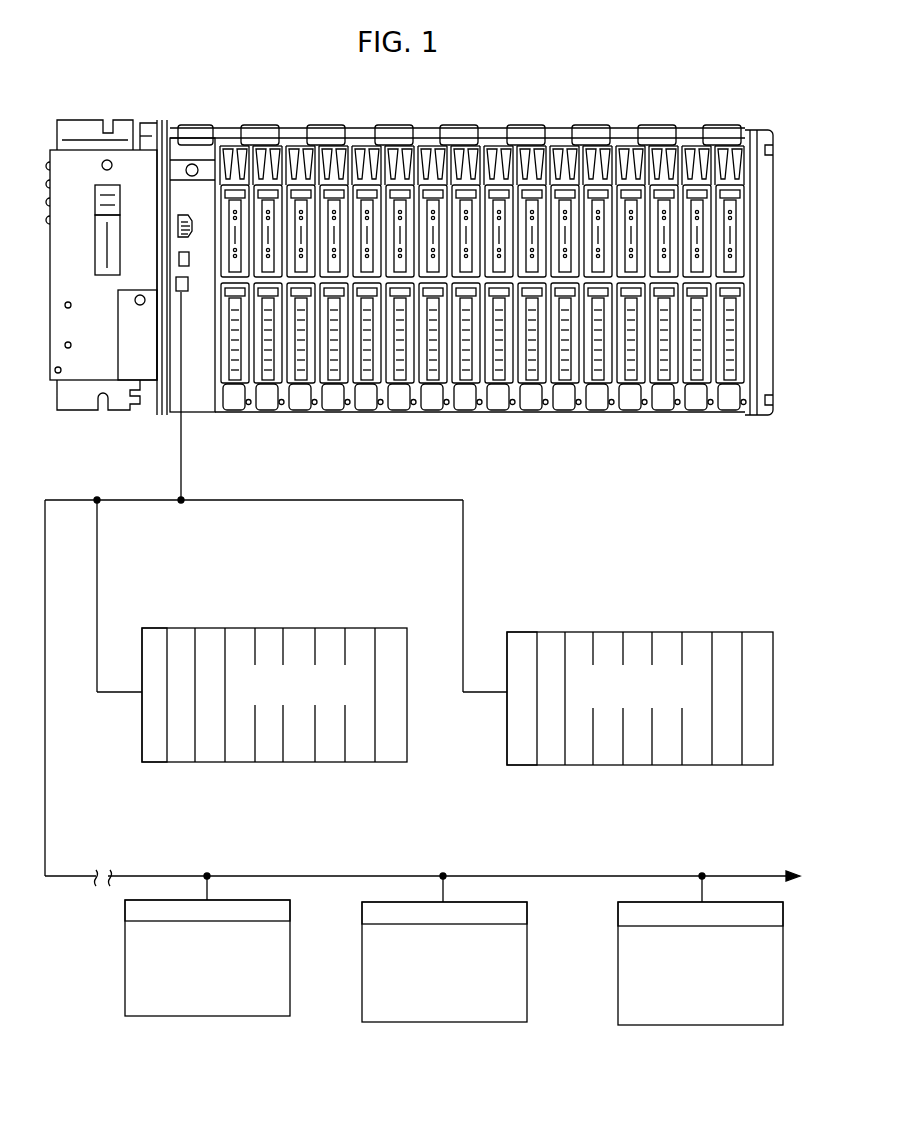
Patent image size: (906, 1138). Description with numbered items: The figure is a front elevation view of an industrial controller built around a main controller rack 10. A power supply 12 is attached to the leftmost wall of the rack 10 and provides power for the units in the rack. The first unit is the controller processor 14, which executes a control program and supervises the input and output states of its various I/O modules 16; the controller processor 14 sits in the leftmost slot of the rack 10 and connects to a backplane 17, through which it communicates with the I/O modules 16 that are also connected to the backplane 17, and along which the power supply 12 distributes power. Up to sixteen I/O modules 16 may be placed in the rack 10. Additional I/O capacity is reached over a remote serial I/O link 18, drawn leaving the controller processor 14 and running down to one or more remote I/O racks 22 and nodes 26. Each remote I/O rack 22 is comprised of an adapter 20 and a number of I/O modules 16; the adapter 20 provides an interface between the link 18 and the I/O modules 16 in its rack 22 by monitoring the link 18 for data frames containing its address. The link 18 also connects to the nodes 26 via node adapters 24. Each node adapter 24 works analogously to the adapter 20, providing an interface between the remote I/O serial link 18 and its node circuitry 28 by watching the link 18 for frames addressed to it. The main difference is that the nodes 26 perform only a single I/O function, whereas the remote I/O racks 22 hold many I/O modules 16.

The main controller rack 10 is at (409, 441).
The power supply 12 is at (68, 150).
The controller processor 14 is at (195, 145).
The I/O modules 16 is at (317, 150).
The backplane 17 is at (490, 128).
The remote serial I/O link 18 is at (181, 450).
The adapter 20 is at (152, 635).
The remote I/O rack 22 is at (283, 620).
The node adapter 24 is at (283, 910).
The node 26 is at (430, 973).
The node circuitry 28 is at (272, 992).